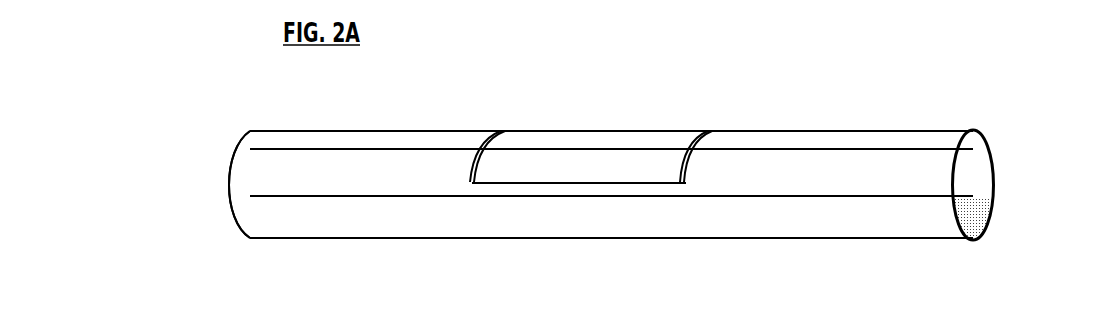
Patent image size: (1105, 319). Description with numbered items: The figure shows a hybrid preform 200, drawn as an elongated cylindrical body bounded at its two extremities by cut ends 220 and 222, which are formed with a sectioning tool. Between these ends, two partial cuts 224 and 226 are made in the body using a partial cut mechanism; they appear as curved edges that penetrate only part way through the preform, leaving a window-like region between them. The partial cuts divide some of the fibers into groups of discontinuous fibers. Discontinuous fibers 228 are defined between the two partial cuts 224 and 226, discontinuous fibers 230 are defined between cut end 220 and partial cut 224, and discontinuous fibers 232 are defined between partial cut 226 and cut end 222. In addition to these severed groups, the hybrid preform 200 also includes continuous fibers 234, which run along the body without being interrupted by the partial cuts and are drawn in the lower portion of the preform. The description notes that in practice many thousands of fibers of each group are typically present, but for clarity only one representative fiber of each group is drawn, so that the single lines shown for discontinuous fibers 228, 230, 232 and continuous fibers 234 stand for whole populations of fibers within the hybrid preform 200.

The hybrid preform 200 is at (618, 173).
The cut end 220 is at (995, 182).
The cut end 222 is at (230, 168).
The partial cut 224 is at (697, 142).
The partial cut 226 is at (490, 132).
The discontinuous fibers 228 is at (580, 154).
The discontinuous fibers 230 is at (843, 148).
The discontinuous fibers 232 is at (362, 149).
The continuous fibers 234 is at (432, 197).